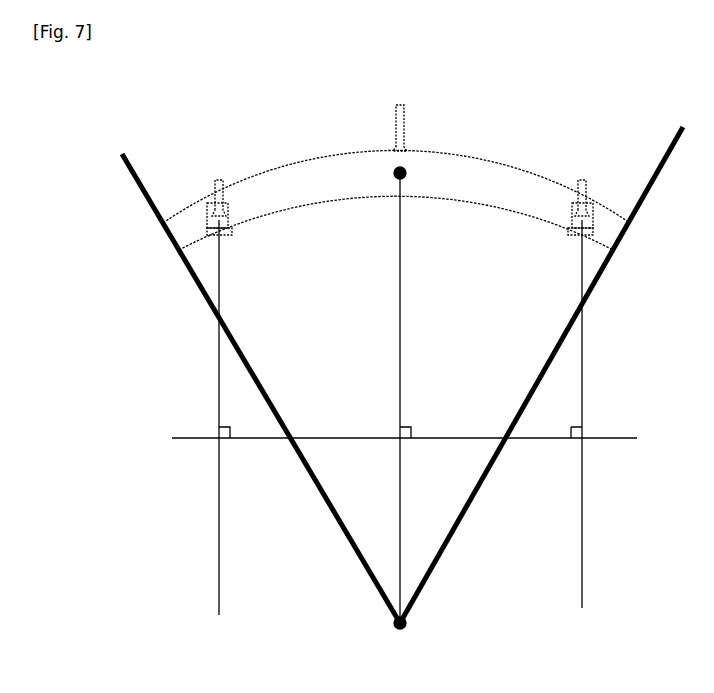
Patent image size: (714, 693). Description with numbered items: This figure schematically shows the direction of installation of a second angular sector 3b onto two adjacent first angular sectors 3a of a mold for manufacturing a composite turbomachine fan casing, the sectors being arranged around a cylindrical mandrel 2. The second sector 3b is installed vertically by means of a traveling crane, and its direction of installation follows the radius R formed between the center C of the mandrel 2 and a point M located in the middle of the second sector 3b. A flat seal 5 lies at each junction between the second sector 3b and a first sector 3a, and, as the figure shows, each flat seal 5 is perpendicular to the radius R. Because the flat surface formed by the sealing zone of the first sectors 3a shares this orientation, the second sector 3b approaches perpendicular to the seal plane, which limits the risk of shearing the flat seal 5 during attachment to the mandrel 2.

The mandrel 2 is at (515, 342).
The first angular sector 3a is at (180, 218).
The second angular sector 3b is at (328, 170).
The flat seal 5 is at (228, 230).
The point in the middle of the second sector M is at (407, 170).
The radius R is at (400, 518).
The center of the mandrel C is at (410, 625).